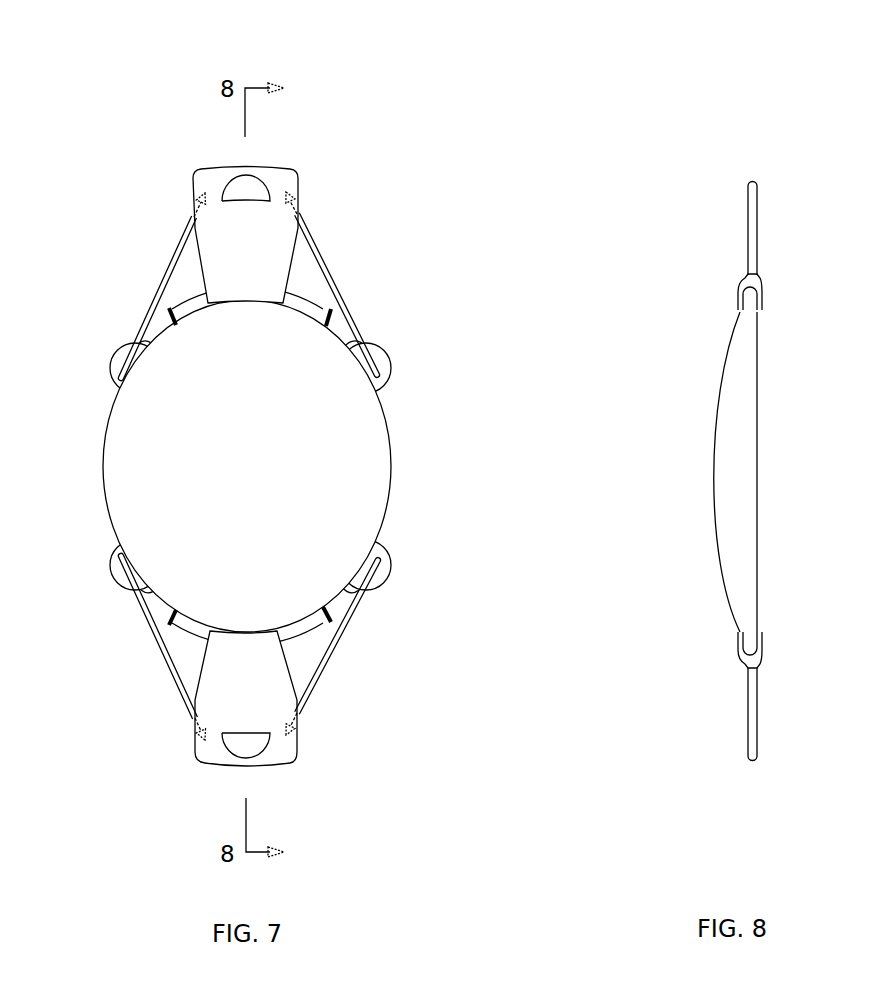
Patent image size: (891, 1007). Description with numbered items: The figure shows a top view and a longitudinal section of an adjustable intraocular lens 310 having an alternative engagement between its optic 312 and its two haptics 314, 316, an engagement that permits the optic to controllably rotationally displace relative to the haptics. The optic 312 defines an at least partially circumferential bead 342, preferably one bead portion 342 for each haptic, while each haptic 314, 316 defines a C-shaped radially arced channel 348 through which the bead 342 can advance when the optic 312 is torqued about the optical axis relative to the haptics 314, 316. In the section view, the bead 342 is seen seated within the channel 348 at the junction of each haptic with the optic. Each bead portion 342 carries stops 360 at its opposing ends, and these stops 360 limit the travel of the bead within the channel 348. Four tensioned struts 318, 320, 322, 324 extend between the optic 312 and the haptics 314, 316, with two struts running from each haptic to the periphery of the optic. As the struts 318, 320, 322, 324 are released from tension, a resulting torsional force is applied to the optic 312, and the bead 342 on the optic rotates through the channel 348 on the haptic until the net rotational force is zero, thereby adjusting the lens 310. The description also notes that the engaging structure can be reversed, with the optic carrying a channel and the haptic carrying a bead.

In FIG. 7, the lens 310 is at (434, 138).
In FIG. 7, the optic 312 is at (380, 461).
In FIG. 8, the optic 312 is at (727, 462).
In FIG. 7, the haptic 314 is at (284, 174).
In FIG. 8, the haptic 314 is at (748, 193).
In FIG. 7, the haptic 316 is at (287, 753).
In FIG. 8, the haptic 316 is at (753, 743).
In FIG. 7, the tensioned strut 318 is at (173, 257).
In FIG. 7, the tensioned strut 320 is at (318, 250).
In FIG. 7, the tensioned strut 322 is at (357, 608).
In FIG. 7, the tensioned strut 324 is at (147, 620).
In FIG. 7, the bead 342 is at (314, 303).
In FIG. 8, the bead 342 is at (743, 296).
In FIG. 8, the C-shaped radially arced channel 348 is at (763, 294).
In FIG. 7, the stop 360 is at (168, 316).